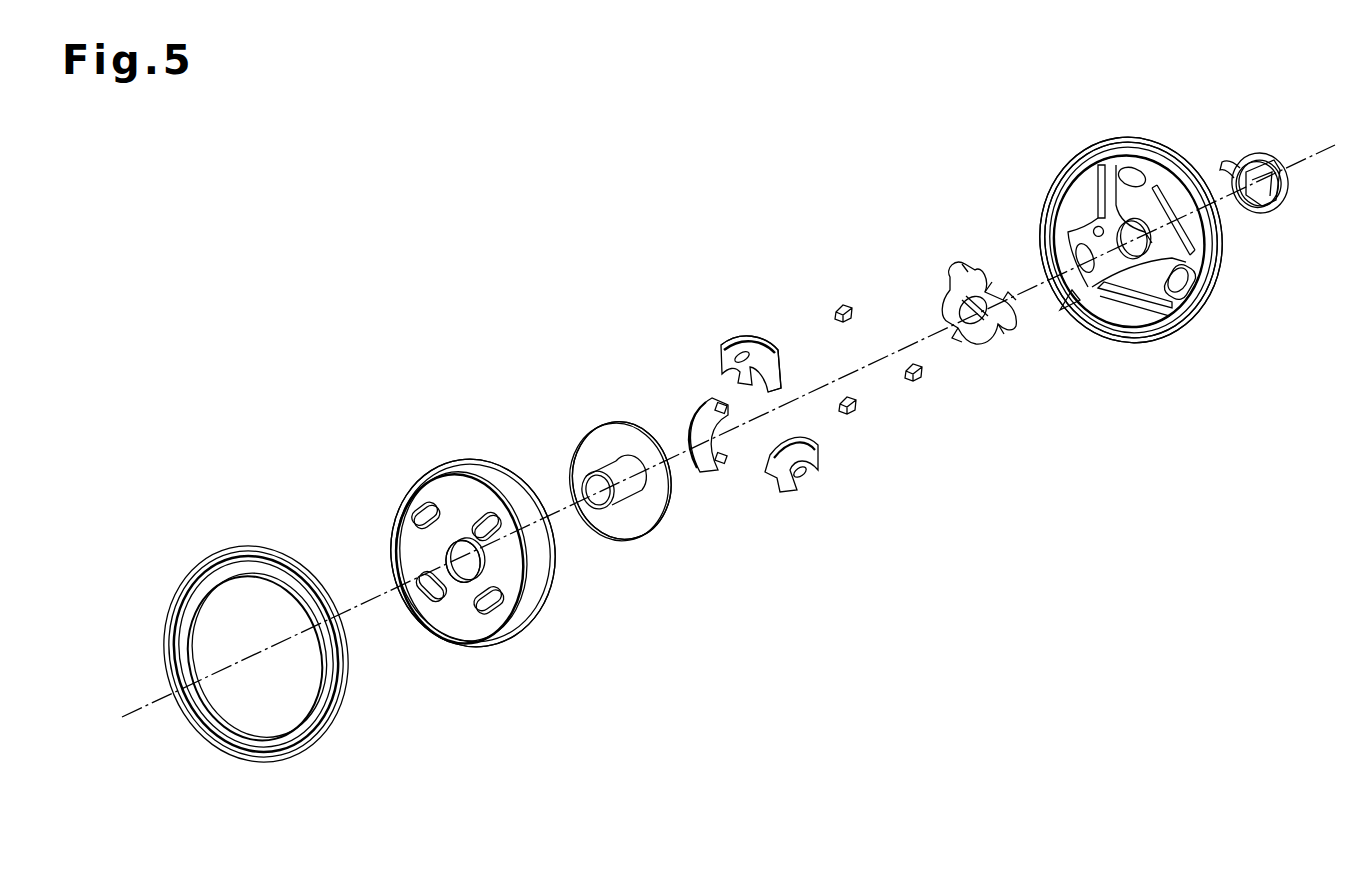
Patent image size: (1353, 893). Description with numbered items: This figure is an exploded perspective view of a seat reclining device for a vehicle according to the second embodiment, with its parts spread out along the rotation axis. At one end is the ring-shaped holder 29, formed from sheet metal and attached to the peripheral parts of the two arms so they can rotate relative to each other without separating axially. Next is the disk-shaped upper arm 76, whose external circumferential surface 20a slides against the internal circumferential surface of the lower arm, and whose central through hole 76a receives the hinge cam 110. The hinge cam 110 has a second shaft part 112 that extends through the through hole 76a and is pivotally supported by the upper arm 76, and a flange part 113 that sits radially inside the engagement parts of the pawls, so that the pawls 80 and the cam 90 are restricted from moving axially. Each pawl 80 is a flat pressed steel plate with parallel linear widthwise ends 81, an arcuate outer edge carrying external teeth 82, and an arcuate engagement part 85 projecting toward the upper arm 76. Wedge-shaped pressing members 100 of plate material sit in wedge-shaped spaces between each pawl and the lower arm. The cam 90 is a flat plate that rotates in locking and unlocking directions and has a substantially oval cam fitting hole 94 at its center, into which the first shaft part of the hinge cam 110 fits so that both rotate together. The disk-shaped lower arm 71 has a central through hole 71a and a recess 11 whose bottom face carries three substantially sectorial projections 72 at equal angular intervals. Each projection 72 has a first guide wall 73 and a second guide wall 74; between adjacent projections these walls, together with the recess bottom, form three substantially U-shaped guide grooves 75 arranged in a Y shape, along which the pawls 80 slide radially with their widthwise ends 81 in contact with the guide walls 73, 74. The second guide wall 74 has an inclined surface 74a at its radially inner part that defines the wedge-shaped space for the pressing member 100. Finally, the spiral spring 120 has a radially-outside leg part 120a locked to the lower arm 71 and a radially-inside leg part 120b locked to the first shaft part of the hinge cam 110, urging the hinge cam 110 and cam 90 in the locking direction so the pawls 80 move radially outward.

The holder 29 is at (240, 550).
The upper arm 76 is at (440, 470).
The external circumferential surface 20a is at (488, 466).
The through hole 76a is at (468, 580).
The hinge cam 110 is at (606, 432).
The second shaft part 112 is at (615, 505).
The flange part 113 is at (660, 514).
The pawl 80 is at (776, 412).
The engagement part 85 is at (760, 347).
The widthwise end 81 is at (722, 366).
The external teeth 82 is at (820, 480).
The pressing member 100 is at (845, 305).
The cam 90 is at (988, 345).
The cam fitting hole 94 is at (966, 330).
The lower arm 71 is at (1137, 241).
The through hole 71a is at (1195, 250).
The projection 72 is at (1074, 200).
The first guide wall 73 is at (1150, 182).
The second guide wall 74 is at (1092, 176).
The inclined surface 74a is at (1072, 292).
The guide groove 75 is at (1110, 148).
The recess 11 is at (1053, 215).
The spiral spring 120 is at (1258, 184).
The radially-outside leg part 120a is at (1224, 160).
The radially-inside leg part 120b is at (1262, 208).